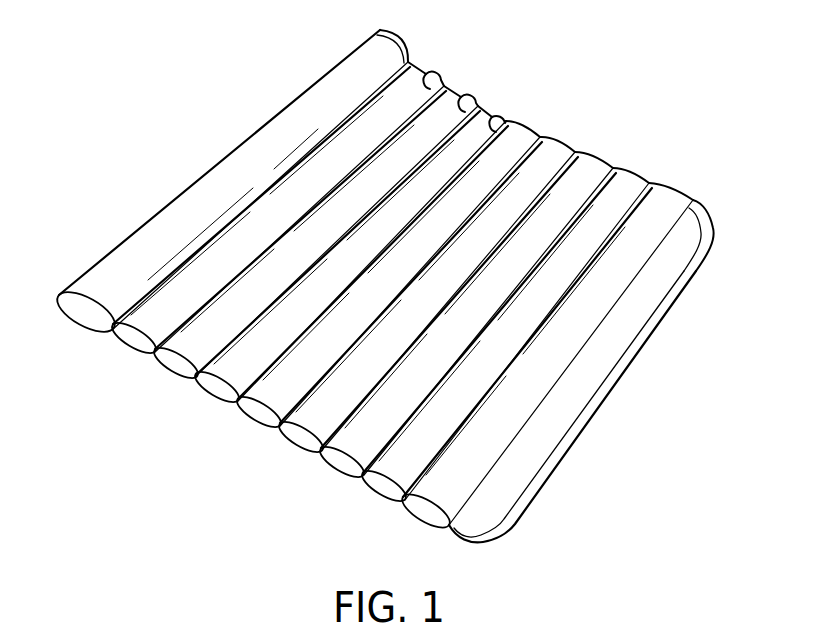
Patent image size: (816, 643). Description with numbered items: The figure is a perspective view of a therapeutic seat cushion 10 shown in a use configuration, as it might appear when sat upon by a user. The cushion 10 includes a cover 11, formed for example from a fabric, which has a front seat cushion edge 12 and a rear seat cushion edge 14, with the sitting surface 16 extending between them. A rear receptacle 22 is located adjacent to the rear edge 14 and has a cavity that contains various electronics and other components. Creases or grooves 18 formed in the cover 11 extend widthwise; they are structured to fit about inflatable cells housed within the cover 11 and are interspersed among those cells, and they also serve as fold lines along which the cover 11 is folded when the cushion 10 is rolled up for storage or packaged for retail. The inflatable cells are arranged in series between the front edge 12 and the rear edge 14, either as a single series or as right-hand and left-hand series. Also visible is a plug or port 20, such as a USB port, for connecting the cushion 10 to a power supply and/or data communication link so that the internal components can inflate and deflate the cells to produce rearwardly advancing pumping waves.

The therapeutic seat cushion 10 is at (634, 84).
The cover 11 is at (673, 198).
The front seat cushion edge 12 is at (675, 335).
The rear seat cushion edge 14 is at (236, 124).
The sitting surface 16 is at (416, 273).
The grooves 18 is at (427, 75).
The port 20 is at (66, 340).
The rear receptacle 22 is at (158, 228).